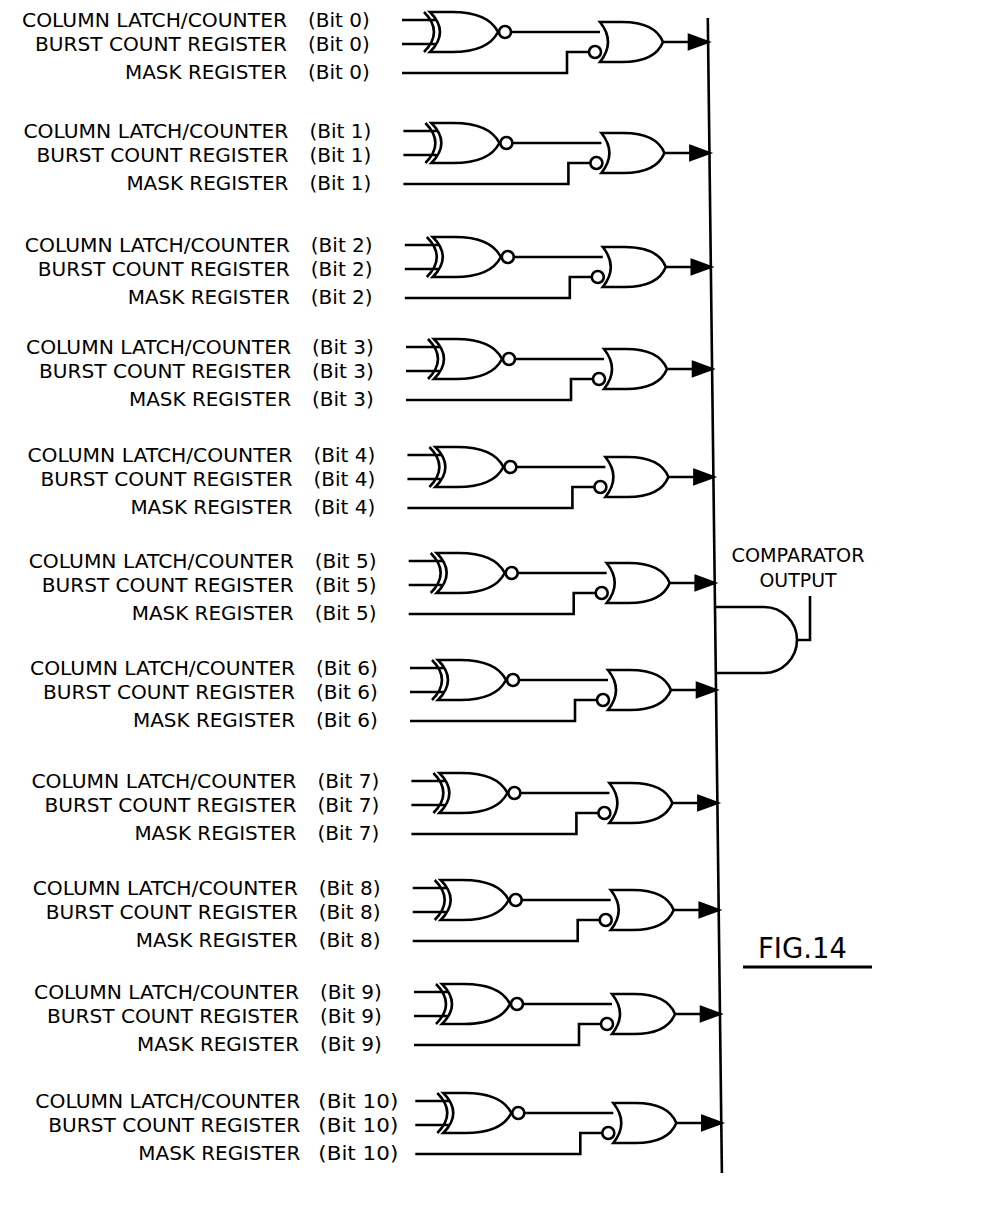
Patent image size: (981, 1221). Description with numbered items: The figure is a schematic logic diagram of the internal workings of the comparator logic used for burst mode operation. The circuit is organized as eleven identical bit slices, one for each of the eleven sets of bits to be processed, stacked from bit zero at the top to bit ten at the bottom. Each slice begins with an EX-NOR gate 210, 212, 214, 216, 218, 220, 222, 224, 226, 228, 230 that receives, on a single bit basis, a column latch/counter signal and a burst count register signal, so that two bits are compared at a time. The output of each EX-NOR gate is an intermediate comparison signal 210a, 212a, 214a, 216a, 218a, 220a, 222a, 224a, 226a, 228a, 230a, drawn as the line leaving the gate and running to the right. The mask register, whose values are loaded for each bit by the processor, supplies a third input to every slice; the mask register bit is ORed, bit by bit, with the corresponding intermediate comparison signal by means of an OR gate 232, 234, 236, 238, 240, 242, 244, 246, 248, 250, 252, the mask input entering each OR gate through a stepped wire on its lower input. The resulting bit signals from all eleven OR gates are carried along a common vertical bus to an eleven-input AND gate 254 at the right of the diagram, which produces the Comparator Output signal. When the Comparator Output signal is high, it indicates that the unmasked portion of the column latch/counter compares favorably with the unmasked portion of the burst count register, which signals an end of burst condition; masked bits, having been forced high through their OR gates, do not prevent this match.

The EX-NOR gate 210 is at (487, 14).
The intermediate comparison signal 210a is at (522, 0).
The OR gate 232 is at (625, 0).
The EX-NOR gate 212 is at (471, 152).
The intermediate comparison signal 212a is at (556, 126).
The OR gate 234 is at (556, 147).
The EX-NOR gate 214 is at (473, 266).
The intermediate comparison signal 214a is at (558, 240).
The OR gate 236 is at (558, 261).
The EX-NOR gate 216 is at (474, 368).
The intermediate comparison signal 216a is at (559, 342).
The OR gate 238 is at (559, 363).
The EX-NOR gate 218 is at (475, 476).
The intermediate comparison signal 218a is at (560, 450).
The OR gate 240 is at (560, 471).
The EX-NOR gate 220 is at (477, 582).
The intermediate comparison signal 220a is at (562, 556).
The OR gate 242 is at (562, 577).
The EX-NOR gate 222 is at (478, 689).
The intermediate comparison signal 222a is at (563, 663).
The OR gate 244 is at (563, 684).
The EX-NOR gate 224 is at (479, 802).
The intermediate comparison signal 224a is at (564, 776).
The OR gate 246 is at (564, 797).
The EX-NOR gate 226 is at (481, 909).
The intermediate comparison signal 226a is at (566, 883).
The OR gate 248 is at (566, 904).
The EX-NOR gate 228 is at (482, 1013).
The intermediate comparison signal 228a is at (567, 987).
The OR gate 250 is at (567, 1008).
The EX-NOR gate 230 is at (483, 1122).
The intermediate comparison signal 230a is at (568, 1096).
The OR gate 252 is at (568, 1117).
The 11-input AND gate 254 is at (768, 653).